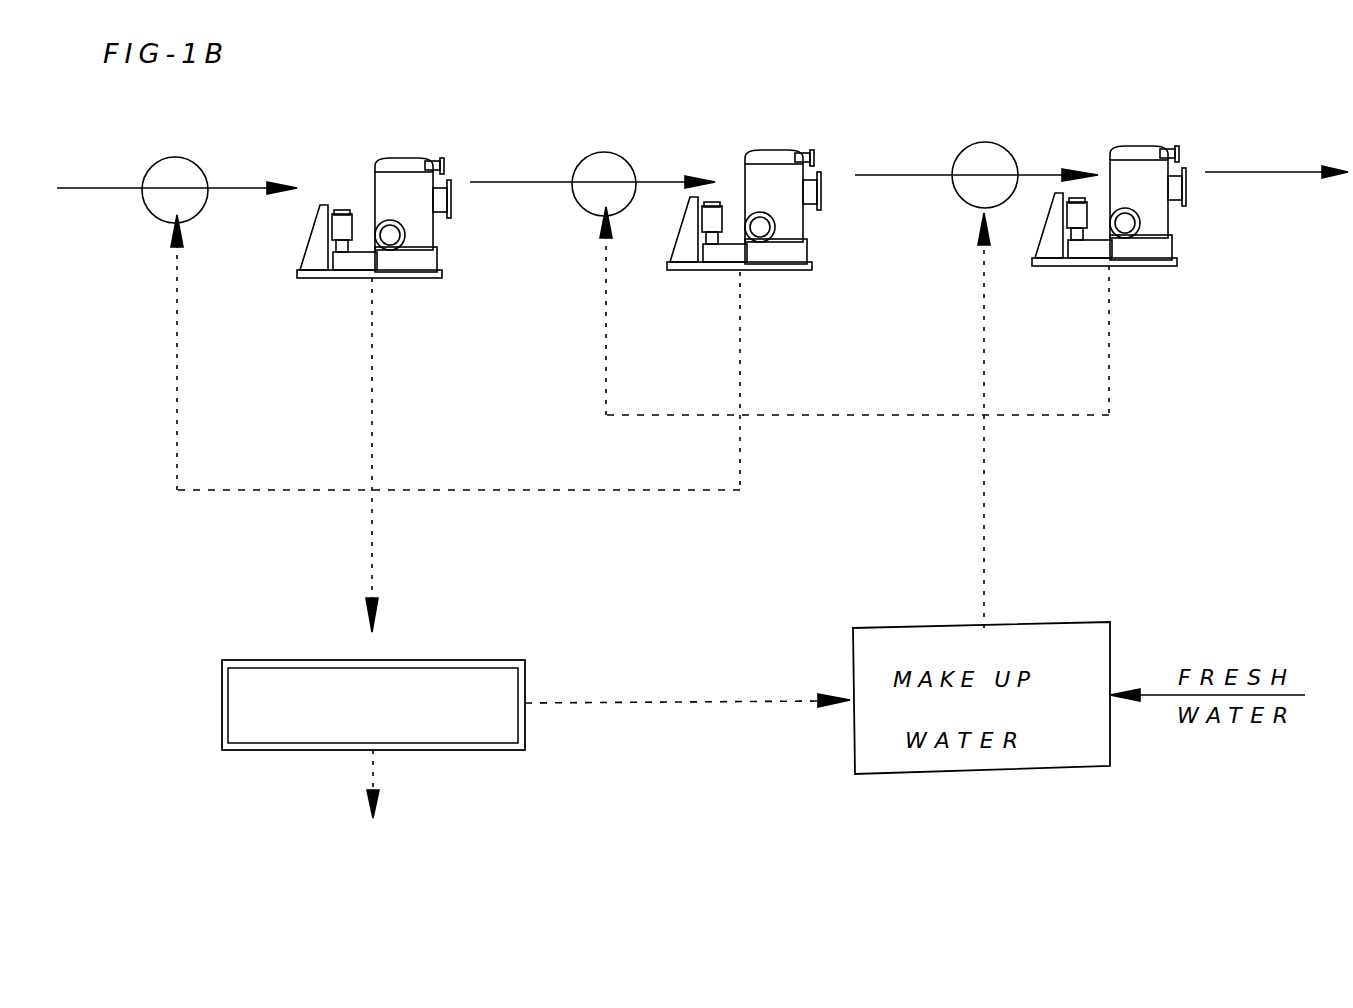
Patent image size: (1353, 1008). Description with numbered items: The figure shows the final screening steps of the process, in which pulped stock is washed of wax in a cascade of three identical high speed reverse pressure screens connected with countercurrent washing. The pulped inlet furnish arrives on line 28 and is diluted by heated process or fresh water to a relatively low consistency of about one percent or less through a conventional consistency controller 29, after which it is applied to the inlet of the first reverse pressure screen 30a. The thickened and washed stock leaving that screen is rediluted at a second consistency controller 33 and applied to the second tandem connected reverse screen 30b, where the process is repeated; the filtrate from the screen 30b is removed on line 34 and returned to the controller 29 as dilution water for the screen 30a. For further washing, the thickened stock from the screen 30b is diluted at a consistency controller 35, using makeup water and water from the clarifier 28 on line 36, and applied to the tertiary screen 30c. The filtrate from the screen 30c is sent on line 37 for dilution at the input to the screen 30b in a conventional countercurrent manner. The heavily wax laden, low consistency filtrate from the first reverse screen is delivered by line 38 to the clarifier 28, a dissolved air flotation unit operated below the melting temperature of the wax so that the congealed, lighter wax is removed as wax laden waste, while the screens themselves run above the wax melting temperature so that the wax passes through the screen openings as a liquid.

The clarifier 28 is at (112, 190).
The consistency controller 29 is at (188, 160).
The reverse pressure screen 30a is at (433, 233).
The second tandem connected reverse screen 30b is at (803, 245).
The tertiary screen 30c is at (1170, 240).
The second consistency controller 33 is at (608, 152).
The filtrate line 34 is at (577, 490).
The consistency controller 35 is at (958, 152).
The water line 36 is at (985, 515).
The filtrate line 37 is at (873, 413).
The filtrate line 38 is at (375, 418).